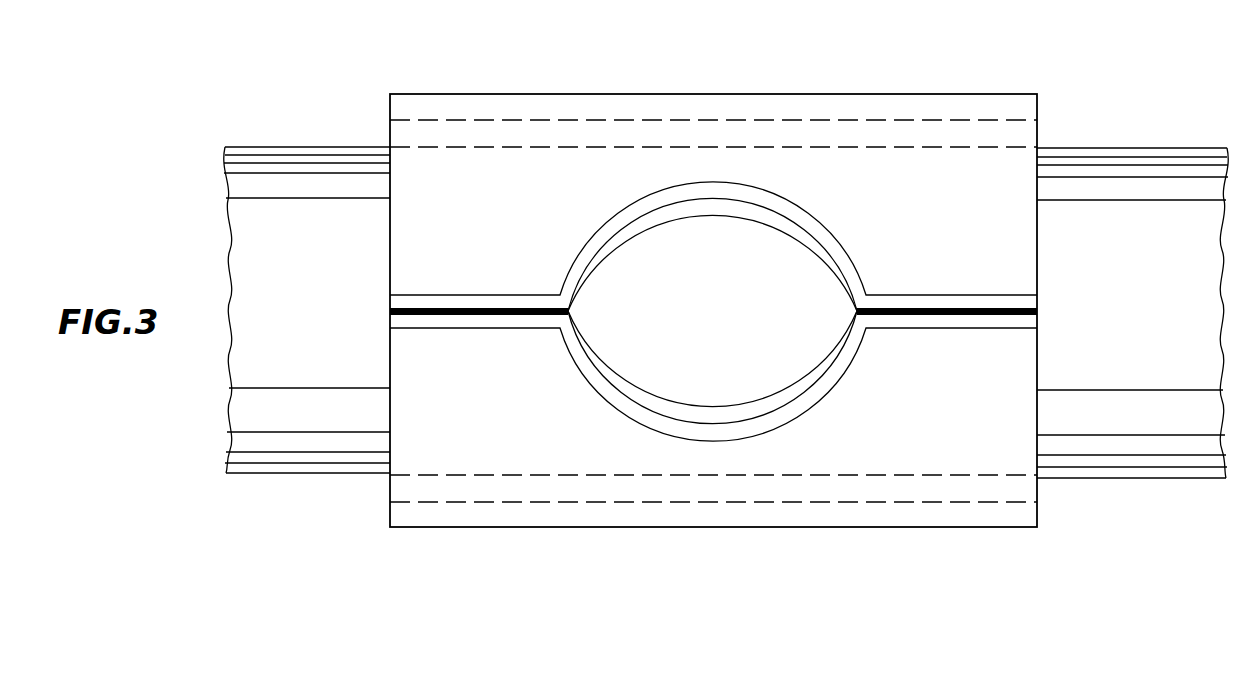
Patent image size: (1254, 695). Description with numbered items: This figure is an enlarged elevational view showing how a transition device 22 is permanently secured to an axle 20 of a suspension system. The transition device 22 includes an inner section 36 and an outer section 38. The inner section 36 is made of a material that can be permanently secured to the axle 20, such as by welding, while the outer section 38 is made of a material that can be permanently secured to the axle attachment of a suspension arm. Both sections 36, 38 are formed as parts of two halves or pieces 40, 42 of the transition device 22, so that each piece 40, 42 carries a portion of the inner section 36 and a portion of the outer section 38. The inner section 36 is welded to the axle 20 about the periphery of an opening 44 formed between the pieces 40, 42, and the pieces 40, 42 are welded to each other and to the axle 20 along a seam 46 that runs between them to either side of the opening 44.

The axle 20 is at (245, 147).
The transition device 22 is at (598, 93).
The inner section 36 is at (770, 228).
The outer section 38 is at (1003, 93).
The piece 40 is at (1037, 248).
The piece 42 is at (1037, 362).
The opening 44 is at (687, 307).
The seam 46 is at (390, 311).